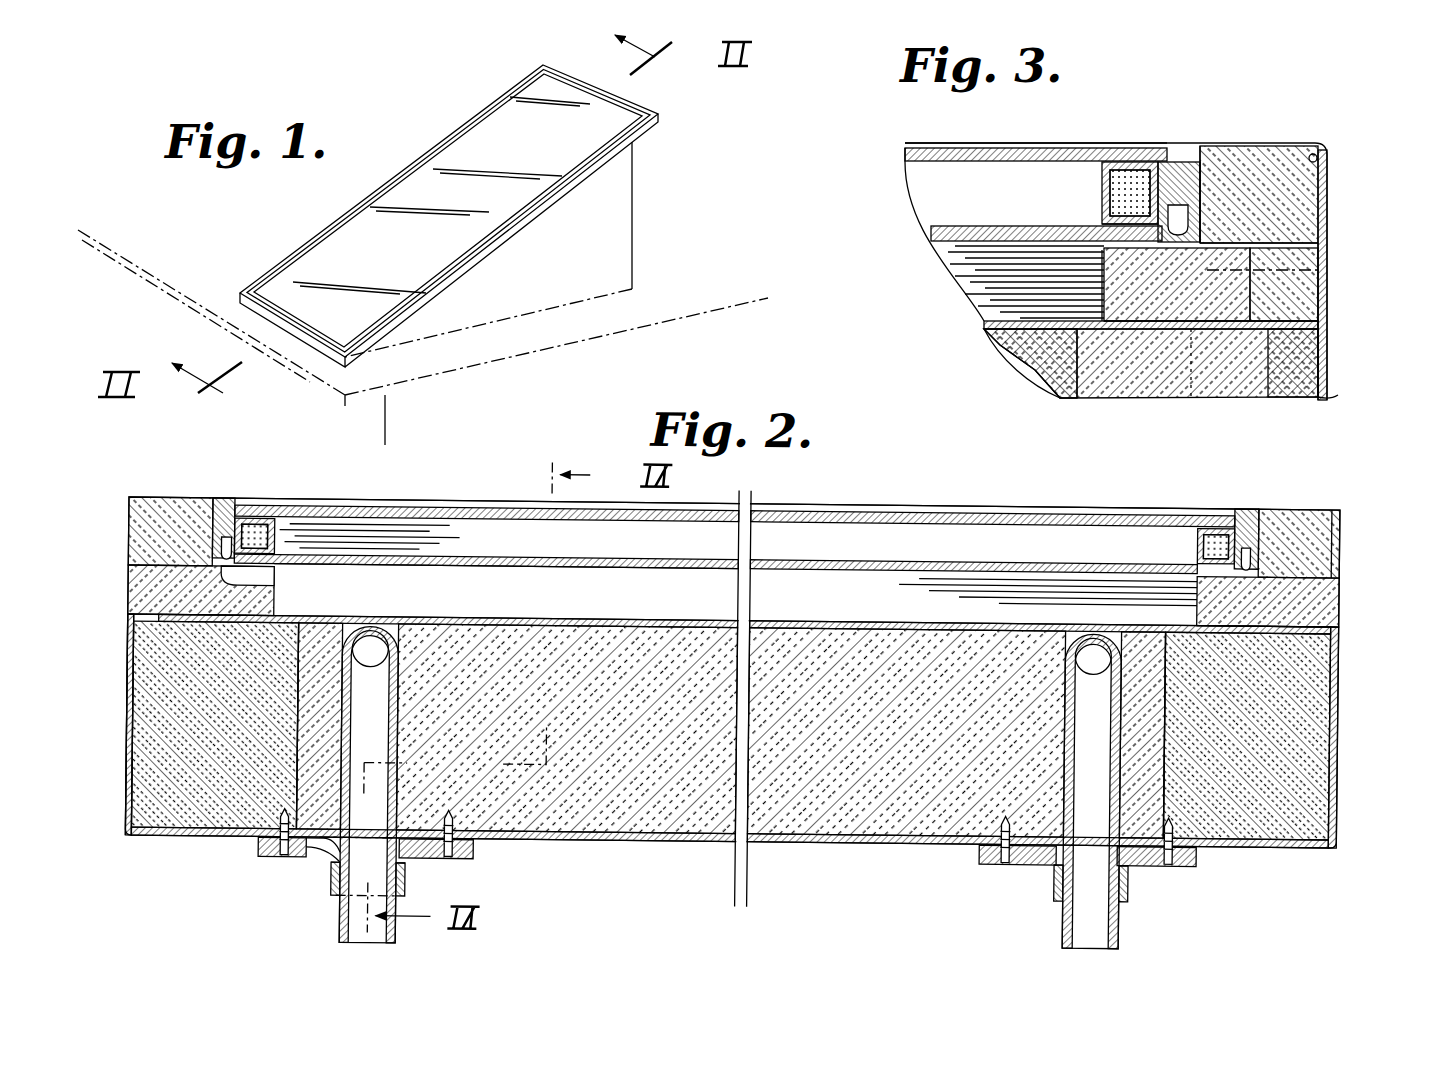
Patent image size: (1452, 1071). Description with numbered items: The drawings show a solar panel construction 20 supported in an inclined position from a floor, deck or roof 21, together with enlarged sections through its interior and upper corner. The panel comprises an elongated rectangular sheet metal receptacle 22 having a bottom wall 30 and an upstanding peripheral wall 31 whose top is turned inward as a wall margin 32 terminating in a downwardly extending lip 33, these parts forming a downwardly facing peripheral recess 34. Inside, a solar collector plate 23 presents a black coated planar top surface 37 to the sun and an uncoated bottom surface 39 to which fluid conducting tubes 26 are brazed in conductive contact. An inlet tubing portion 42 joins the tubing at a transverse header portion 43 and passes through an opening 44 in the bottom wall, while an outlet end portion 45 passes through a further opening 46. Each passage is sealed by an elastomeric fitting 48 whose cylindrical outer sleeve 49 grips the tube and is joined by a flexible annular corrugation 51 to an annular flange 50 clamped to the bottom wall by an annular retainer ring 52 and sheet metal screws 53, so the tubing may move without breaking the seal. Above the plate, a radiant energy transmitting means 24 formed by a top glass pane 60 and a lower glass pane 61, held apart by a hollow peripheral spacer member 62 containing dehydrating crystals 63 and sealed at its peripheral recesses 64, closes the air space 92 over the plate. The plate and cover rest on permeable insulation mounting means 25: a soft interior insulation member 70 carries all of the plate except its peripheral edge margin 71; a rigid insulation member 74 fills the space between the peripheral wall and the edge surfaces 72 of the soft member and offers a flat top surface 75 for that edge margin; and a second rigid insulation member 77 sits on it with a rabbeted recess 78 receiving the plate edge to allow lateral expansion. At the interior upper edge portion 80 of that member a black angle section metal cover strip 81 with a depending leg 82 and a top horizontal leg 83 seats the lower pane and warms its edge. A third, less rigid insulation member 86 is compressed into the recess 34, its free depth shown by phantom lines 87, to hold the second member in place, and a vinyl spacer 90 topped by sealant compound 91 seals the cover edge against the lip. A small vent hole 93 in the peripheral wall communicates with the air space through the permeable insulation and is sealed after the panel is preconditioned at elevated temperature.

In FIG. 1, the solar panel construction 20 is at (323, 222).
In FIG. 3, the solar panel construction 20 is at (895, 198).
In FIG. 2, the solar panel construction 20 is at (808, 494).
In FIG. 1, the floor, deck or roof 21 is at (660, 335).
In FIG. 1, the receptacle 22 is at (532, 220).
In FIG. 2, the receptacle 22 is at (121, 788).
In FIG. 3, the solar collector plate 23 is at (984, 326).
In FIG. 2, the solar collector plate 23 is at (680, 618).
In FIG. 1, the radiant energy transmitting means 24 is at (483, 150).
In FIG. 3, the radiant energy transmitting means 24 is at (940, 144).
In FIG. 2, the radiant energy transmitting means 24 is at (462, 492).
In FIG. 3, the permeable insulation mounting means 25 is at (1270, 314).
In FIG. 2, the fluid conducting tubes 26 is at (400, 640).
In FIG. 2, the bottom wall 30 is at (795, 836).
In FIG. 3, the peripheral wall 31 is at (1323, 397).
In FIG. 2, the peripheral wall 31 is at (1340, 685).
In FIG. 3, the wall margin 32 is at (1278, 146).
In FIG. 2, the wall margin 32 is at (1322, 497).
In FIG. 3, the lip 33 is at (1203, 185).
In FIG. 2, the lip 33 is at (1255, 522).
In FIG. 3, the recess 34 is at (1323, 150).
In FIG. 2, the recess 34 is at (1335, 529).
In FIG. 2, the top surface 37 is at (915, 592).
In FIG. 3, the bottom surface 39 is at (1023, 334).
In FIG. 2, the bottom surface 39 is at (790, 622).
In FIG. 2, the inlet tubing portion 42 is at (344, 927).
In FIG. 2, the transverse header portion 43 is at (372, 624).
In FIG. 2, the opening 44 is at (318, 835).
In FIG. 2, the outlet end portion 45 is at (1125, 924).
In FIG. 2, the opening 46 is at (1062, 852).
In FIG. 2, the elastomeric fitting 48 is at (330, 882).
In FIG. 2, the cylindrical outer sleeve 49 is at (405, 886).
In FIG. 2, the annular flange 50 is at (470, 848).
In FIG. 2, the annular corrugation 51 is at (327, 860).
In FIG. 2, the annular retainer ring 52 is at (477, 860).
In FIG. 2, the sheet metal screws 53 is at (460, 815).
In FIG. 1, the top glass pane 60 is at (462, 262).
In FIG. 3, the top glass pane 60 is at (993, 146).
In FIG. 2, the top glass pane 60 is at (860, 504).
In FIG. 3, the lower glass pane 61 is at (930, 235).
In FIG. 2, the lower glass pane 61 is at (915, 532).
In FIG. 3, the hollow peripheral spacer member 62 is at (1108, 165).
In FIG. 2, the hollow peripheral spacer member 62 is at (276, 550).
In FIG. 3, the dehydrating crystals 63 is at (1132, 180).
In FIG. 2, the dehydrating crystals 63 is at (1210, 525).
In FIG. 3, the peripheral recesses 64 is at (1166, 200).
In FIG. 2, the peripheral recesses 64 is at (236, 532).
In FIG. 2, the interior insulation member 70 is at (676, 813).
In FIG. 3, the peripheral edge margin 71 is at (1079, 354).
In FIG. 2, the peripheral edge margin 71 is at (1175, 618).
In FIG. 2, the edge surfaces 72 is at (1167, 752).
In FIG. 3, the rigid insulation member 74 is at (1133, 382).
In FIG. 2, the rigid insulation member 74 is at (190, 731).
In FIG. 3, the flat top surface 75 is at (1270, 352).
In FIG. 2, the flat top surface 75 is at (1318, 614).
In FIG. 3, the second outer peripheral rigid insulation member 77 is at (1300, 305).
In FIG. 2, the second outer peripheral rigid insulation member 77 is at (150, 590).
In FIG. 3, the rabbeted recess 78 is at (1193, 347).
In FIG. 2, the rabbeted recess 78 is at (1257, 621).
In FIG. 3, the interior upper edge portion 80 is at (1106, 274).
In FIG. 3, the angle section metal cover strip 81 is at (1104, 254).
In FIG. 2, the angle section metal cover strip 81 is at (1195, 561).
In FIG. 3, the depending leg 82 is at (1104, 285).
In FIG. 3, the top horizontal leg 83 is at (1108, 226).
In FIG. 3, the third peripheral insulation member 86 is at (1300, 189).
In FIG. 2, the third peripheral insulation member 86 is at (150, 518).
In FIG. 3, the phantom lines 87 is at (1330, 272).
In FIG. 3, the vinyl spacer 90 is at (1215, 243).
In FIG. 2, the vinyl spacer 90 is at (278, 582).
In FIG. 3, the sealant compound 91 is at (1190, 175).
In FIG. 2, the sealant compound 91 is at (224, 507).
In FIG. 2, the air space 92 is at (506, 585).
In FIG. 2, the vent hole 93 is at (129, 692).